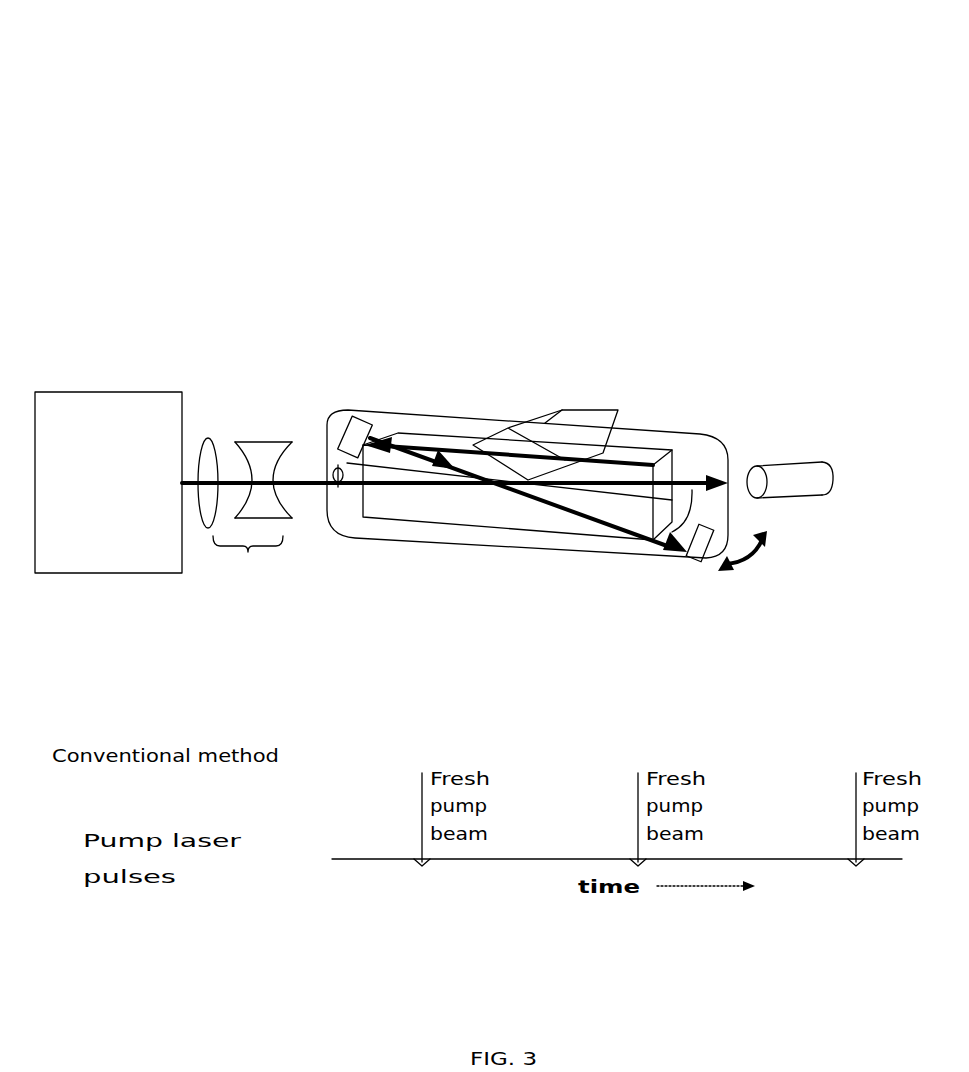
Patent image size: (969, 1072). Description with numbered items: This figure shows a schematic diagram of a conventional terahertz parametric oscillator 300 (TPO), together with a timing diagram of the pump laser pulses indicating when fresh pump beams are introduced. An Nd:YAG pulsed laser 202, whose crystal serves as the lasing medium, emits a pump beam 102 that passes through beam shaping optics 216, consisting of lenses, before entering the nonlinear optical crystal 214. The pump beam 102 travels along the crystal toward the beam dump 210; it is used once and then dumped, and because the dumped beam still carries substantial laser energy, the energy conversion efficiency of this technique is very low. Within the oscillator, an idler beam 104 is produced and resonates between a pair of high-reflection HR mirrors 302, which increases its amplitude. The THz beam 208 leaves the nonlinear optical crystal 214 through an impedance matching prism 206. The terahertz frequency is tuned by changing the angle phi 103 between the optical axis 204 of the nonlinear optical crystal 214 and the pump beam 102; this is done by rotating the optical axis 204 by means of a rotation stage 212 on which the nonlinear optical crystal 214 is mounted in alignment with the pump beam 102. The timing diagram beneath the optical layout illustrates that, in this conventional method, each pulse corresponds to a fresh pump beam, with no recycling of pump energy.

The terahertz parametric oscillator 300 is at (408, 289).
The Nd:YAG pulsed laser 202 is at (88, 495).
The pump beam 102 is at (710, 467).
The beam shaping optics 216 is at (251, 568).
The angle phi 103 is at (313, 478).
The optical axis 204 is at (340, 467).
The HR mirror 302 is at (368, 418).
The nonlinear optical crystal 214 is at (418, 518).
The idler beam 104 is at (678, 552).
The impedance matching prism 206 is at (470, 440).
The THz beam 208 is at (582, 405).
The beam dump 210 is at (875, 445).
The rotation stage 212 is at (730, 520).